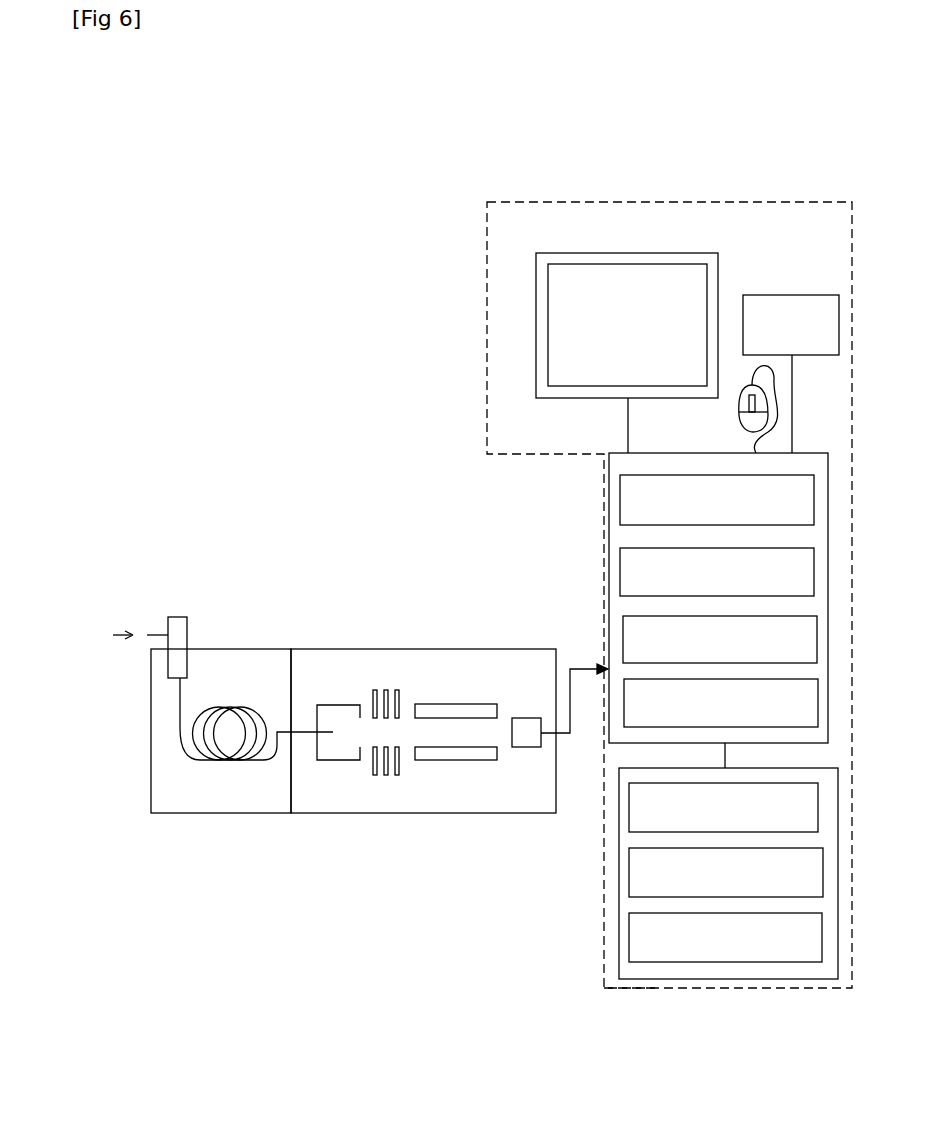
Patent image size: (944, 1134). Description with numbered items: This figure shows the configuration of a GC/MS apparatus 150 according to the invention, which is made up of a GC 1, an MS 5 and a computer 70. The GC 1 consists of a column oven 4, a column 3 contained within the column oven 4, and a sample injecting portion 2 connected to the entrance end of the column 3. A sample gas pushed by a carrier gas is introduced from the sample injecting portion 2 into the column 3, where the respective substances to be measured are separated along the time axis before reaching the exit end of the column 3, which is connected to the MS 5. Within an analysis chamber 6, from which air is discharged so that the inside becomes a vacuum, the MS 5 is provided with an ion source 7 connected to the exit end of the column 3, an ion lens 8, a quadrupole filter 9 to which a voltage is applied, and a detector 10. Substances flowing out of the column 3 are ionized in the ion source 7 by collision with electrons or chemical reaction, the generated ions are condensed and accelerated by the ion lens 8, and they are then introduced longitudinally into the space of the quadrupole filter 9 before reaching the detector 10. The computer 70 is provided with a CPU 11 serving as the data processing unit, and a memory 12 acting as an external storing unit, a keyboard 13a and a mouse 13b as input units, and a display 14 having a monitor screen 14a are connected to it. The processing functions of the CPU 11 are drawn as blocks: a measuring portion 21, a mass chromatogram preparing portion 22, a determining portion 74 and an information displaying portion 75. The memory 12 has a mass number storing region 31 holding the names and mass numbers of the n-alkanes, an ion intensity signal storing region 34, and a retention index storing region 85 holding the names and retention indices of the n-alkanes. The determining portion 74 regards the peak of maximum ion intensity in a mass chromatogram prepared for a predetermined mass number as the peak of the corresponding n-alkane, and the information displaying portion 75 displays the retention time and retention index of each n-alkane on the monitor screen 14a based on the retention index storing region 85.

The GC/MS apparatus 150 is at (360, 187).
The GC 1 is at (147, 833).
The sample injecting portion 2 is at (182, 628).
The column 3 is at (178, 713).
The column oven 4 is at (172, 782).
The MS 5 is at (559, 833).
The analysis chamber 6 is at (315, 672).
The ion source 7 is at (340, 704).
The ion lens 8 is at (370, 686).
The quadrupole filter 9 is at (462, 710).
The detector 10 is at (527, 727).
The CPU 11 is at (608, 520).
The memory 12 is at (640, 988).
The keyboard 13a is at (790, 325).
The mouse 13b is at (745, 422).
The display 14 is at (523, 328).
The monitor screen 14a is at (618, 278).
The measuring portion 21 is at (814, 497).
The mass chromatogram preparing portion 22 is at (814, 570).
The determining portion 74 is at (817, 637).
The information displaying portion 75 is at (818, 700).
The computer 70 is at (733, 979).
The mass number storing region 31 is at (818, 803).
The retention index storing region 85 is at (823, 868).
The ion intensity signal storing region 34 is at (822, 932).